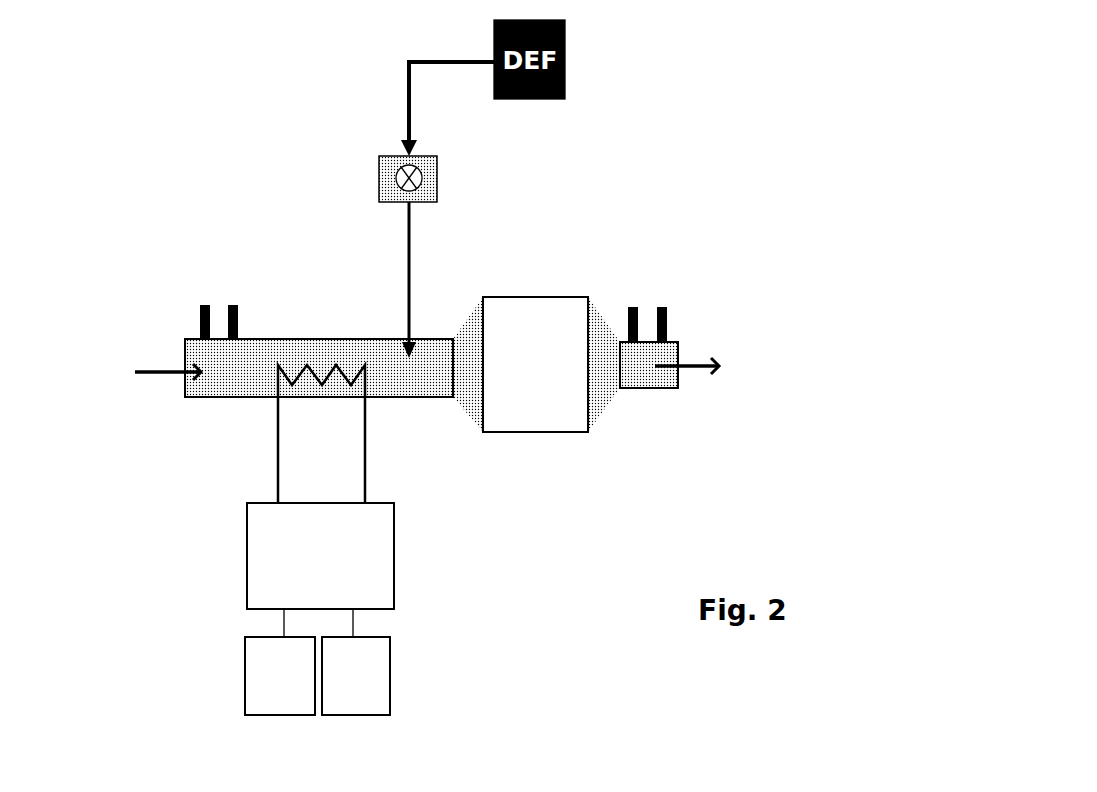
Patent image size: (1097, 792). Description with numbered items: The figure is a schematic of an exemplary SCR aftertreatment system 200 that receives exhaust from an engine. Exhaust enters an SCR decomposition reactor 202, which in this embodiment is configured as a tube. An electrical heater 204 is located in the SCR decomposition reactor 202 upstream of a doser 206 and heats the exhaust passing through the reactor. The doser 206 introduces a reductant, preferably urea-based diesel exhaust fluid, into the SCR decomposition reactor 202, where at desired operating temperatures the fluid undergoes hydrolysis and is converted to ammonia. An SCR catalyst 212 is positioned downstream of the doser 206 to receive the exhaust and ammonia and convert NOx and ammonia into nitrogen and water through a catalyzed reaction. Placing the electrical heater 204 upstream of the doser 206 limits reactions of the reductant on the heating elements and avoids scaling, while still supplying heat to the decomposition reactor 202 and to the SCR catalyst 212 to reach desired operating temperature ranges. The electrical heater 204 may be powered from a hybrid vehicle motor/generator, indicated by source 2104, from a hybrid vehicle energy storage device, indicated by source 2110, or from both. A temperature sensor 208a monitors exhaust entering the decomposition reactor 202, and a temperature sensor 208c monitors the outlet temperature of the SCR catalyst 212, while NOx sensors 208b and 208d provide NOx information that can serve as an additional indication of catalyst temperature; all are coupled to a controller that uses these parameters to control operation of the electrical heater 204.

The SCR aftertreatment system 200 is at (733, 99).
The SCR decomposition reactor 202 is at (232, 397).
The electrical heater 204 is at (394, 540).
The doser 206 is at (435, 162).
The temperature sensor 208a is at (200, 320).
The NOx sensor 208b is at (238, 322).
The temperature sensor 208c is at (628, 255).
The NOx sensor 208d is at (665, 255).
The SCR catalyst 212 is at (562, 432).
The motor/generator source 2104 is at (280, 662).
The energy storage device source 2110 is at (356, 662).